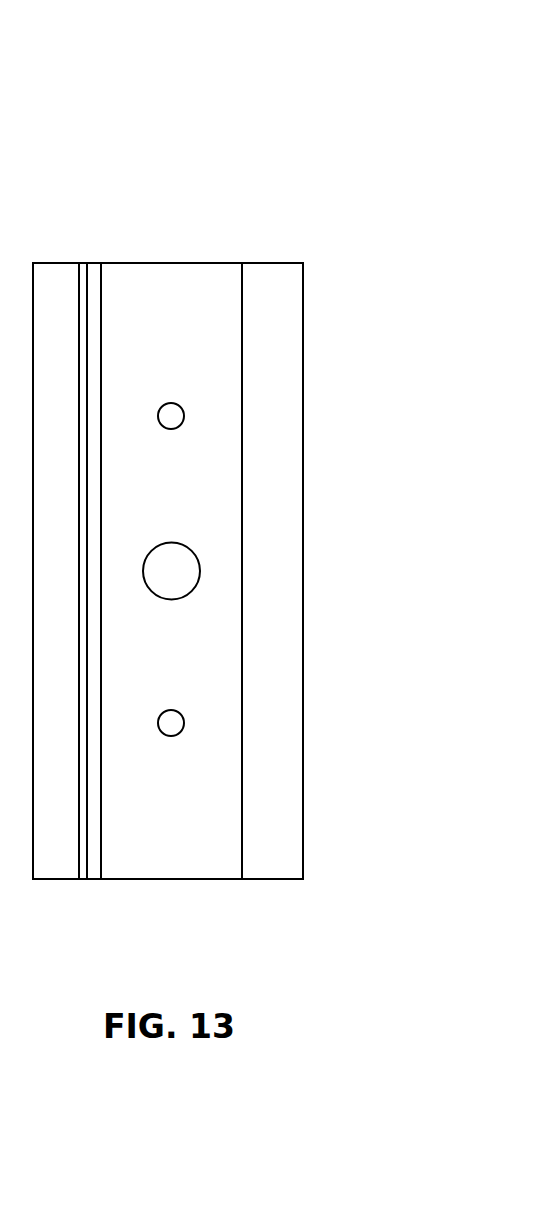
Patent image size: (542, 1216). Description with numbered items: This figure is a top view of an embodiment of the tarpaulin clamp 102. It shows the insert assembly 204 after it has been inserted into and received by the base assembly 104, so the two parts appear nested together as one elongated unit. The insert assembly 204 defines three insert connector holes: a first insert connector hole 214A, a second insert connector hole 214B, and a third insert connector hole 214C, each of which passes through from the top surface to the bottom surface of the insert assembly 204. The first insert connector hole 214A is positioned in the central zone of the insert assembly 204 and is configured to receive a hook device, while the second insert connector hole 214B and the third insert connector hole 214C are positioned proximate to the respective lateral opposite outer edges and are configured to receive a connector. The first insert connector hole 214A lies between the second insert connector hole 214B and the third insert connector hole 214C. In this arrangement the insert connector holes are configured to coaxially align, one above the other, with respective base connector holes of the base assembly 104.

The tarpaulin clamp 102 is at (29, 132).
The base assembly 104 is at (55, 262).
The insert assembly 204 is at (167, 262).
The first insert connector hole 214A is at (200, 571).
The second insert connector hole 214B is at (184, 415).
The third insert connector hole 214C is at (184, 722).